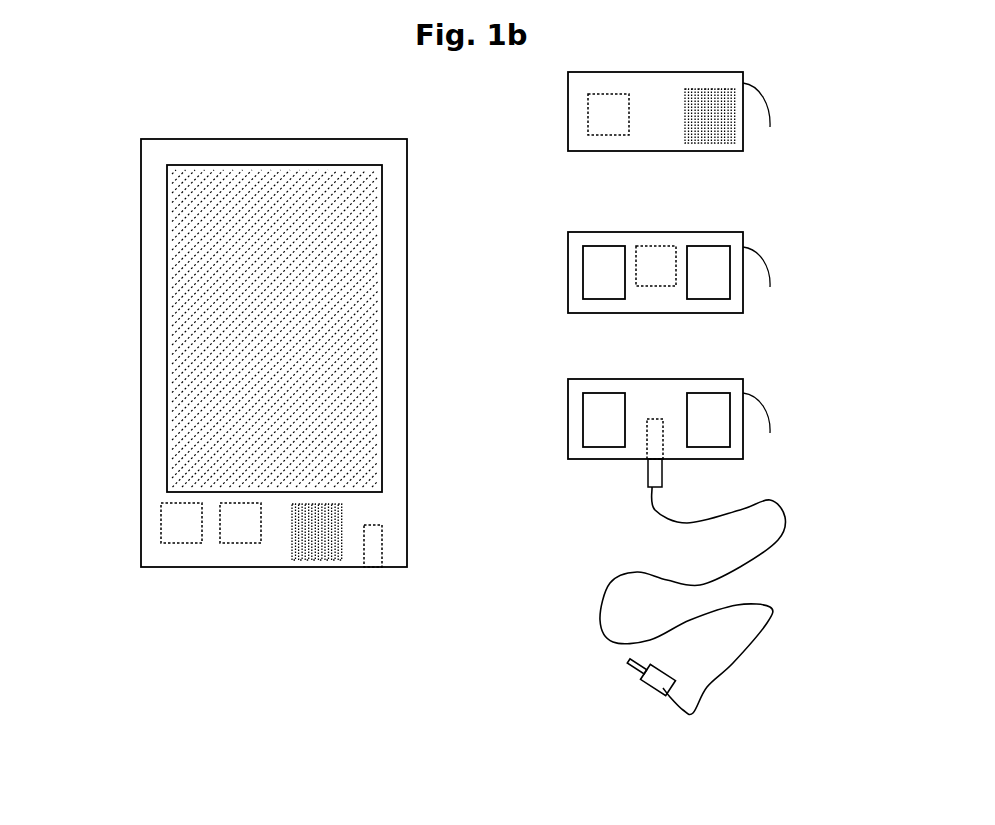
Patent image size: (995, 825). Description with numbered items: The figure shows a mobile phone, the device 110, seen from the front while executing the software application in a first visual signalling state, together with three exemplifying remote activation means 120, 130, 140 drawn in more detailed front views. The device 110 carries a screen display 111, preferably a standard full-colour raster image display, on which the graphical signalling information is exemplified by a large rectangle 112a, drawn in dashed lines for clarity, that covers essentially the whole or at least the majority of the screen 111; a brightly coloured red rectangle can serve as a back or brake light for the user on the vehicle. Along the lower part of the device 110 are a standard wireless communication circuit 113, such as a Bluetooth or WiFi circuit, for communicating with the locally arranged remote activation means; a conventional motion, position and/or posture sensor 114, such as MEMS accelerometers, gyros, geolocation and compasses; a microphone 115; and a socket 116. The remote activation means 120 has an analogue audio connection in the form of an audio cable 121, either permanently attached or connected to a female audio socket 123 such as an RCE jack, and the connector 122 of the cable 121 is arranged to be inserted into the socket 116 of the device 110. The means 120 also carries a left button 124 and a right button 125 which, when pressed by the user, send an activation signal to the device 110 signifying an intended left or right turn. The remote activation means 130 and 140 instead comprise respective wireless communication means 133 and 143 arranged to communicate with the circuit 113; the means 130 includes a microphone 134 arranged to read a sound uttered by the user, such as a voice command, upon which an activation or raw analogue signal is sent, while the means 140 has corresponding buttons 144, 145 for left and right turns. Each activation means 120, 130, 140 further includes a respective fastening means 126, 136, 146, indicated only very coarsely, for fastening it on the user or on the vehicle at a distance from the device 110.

The device 110 is at (140, 267).
The screen display 111 is at (167, 347).
The rectangle 112a is at (175, 392).
The wireless communication circuit 113 is at (181, 523).
The motion and/or position and/or posture sensor 114 is at (240, 523).
The microphone 115 is at (322, 560).
The socket 116 is at (382, 540).
The remote activation means 120 is at (568, 443).
The audio cable 121 is at (773, 545).
The connector 122 is at (648, 672).
The female audio socket 123 is at (653, 419).
The left button 124 is at (583, 410).
The right button 125 is at (730, 440).
The fastening means 126 is at (762, 408).
The remote activation means 130 is at (568, 132).
The wireless communication means 133 is at (588, 100).
The microphone 134 is at (737, 135).
The fastening means 136 is at (762, 100).
The remote activation means 140 is at (568, 298).
The wireless communication means 143 is at (645, 246).
The button 144 is at (583, 263).
The button 145 is at (730, 295).
The fastening means 146 is at (762, 268).